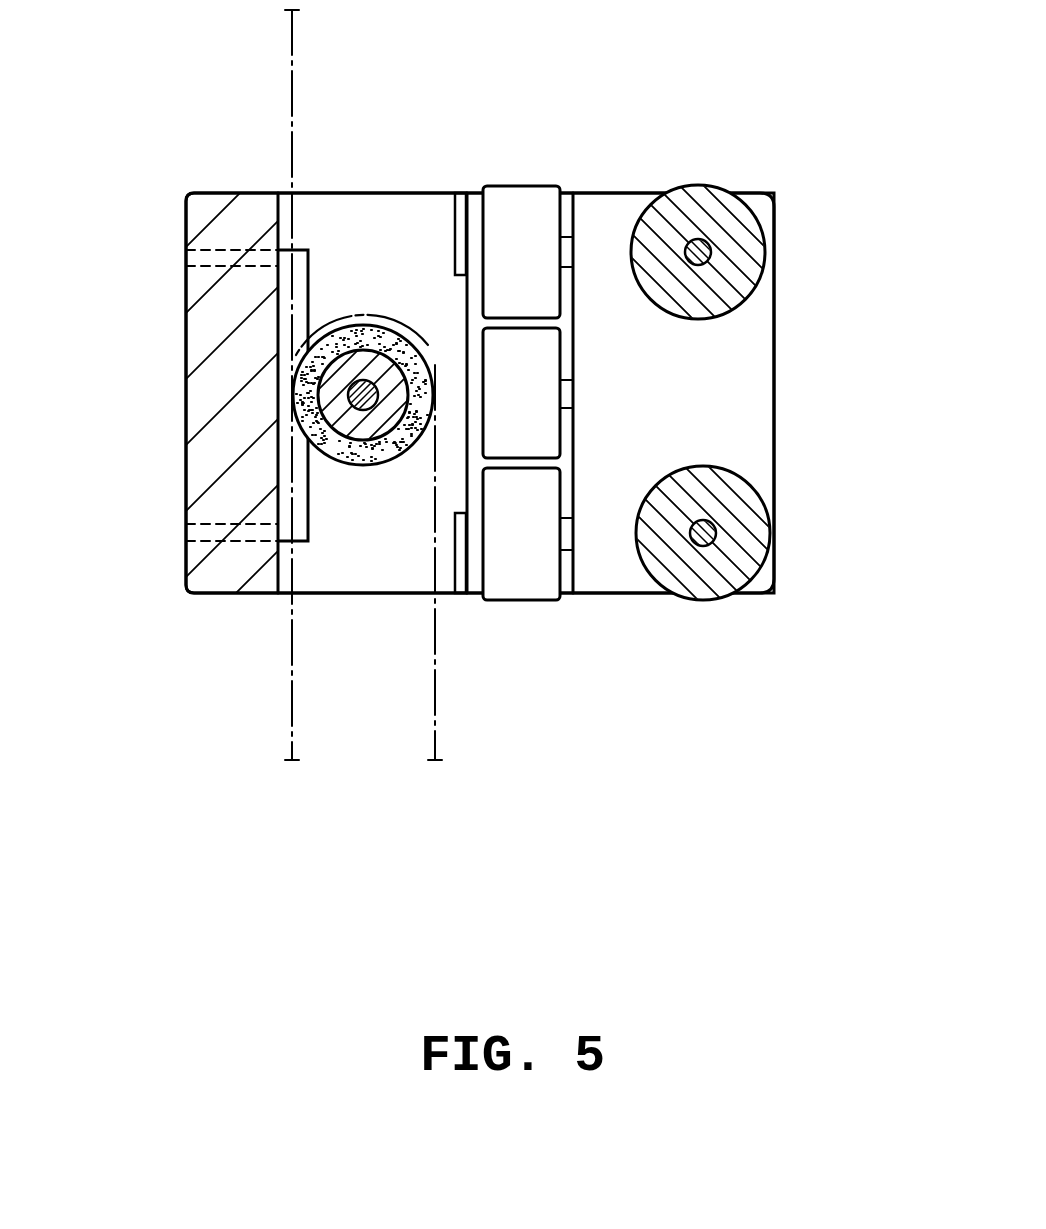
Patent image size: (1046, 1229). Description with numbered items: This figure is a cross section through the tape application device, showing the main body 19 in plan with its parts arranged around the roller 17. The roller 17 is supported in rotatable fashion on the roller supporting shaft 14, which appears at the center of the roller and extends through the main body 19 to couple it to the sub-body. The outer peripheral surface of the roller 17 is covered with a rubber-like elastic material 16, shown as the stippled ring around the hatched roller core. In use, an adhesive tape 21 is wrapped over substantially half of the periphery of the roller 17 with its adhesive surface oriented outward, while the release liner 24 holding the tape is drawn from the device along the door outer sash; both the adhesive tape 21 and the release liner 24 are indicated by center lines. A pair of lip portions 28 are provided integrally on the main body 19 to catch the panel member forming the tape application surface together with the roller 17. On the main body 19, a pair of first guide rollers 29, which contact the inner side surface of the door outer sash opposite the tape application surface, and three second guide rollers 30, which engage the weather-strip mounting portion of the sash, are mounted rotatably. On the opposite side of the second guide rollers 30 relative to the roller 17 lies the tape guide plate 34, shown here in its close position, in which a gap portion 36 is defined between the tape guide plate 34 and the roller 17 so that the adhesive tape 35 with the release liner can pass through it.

The roller supporting shaft 14 is at (362, 380).
The rubber-like elastic material 16 is at (300, 410).
The roller 17 is at (335, 385).
The main body 19 is at (601, 138).
The adhesive tape 21 is at (437, 722).
The release liner 24 is at (291, 50).
The lip portions 28 is at (455, 198).
The first guide rollers 29 is at (763, 253).
The second guide rollers 30 is at (521, 198).
The tape guide plate 34 is at (200, 487).
The adhesive tape with the release liner 35 is at (292, 655).
The gap portion 36 is at (285, 440).